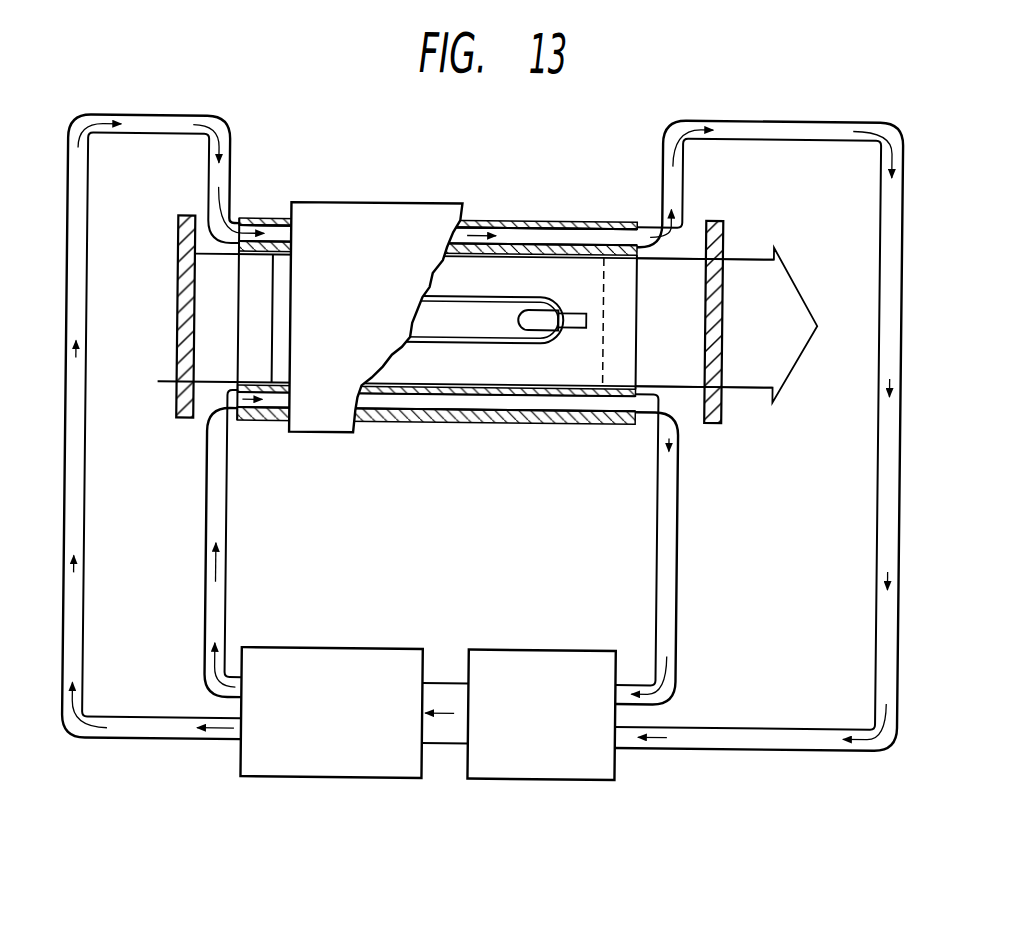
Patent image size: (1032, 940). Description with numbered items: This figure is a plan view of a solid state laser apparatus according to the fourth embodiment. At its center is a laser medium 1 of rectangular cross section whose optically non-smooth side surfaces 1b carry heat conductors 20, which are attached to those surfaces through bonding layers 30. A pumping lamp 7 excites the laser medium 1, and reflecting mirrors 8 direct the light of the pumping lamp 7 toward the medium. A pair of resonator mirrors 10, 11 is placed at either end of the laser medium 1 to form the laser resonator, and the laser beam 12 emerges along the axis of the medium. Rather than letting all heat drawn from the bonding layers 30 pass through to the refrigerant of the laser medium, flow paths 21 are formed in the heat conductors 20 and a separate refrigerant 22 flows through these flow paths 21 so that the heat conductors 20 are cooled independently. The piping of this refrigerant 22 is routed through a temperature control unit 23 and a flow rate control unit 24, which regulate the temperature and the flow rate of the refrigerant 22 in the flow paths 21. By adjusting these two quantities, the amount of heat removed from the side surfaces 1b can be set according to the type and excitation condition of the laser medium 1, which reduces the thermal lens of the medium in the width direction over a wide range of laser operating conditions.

The laser medium 1 is at (465, 325).
The optically non-smooth surfaces 1b is at (615, 222).
The pumping lamp 7 is at (440, 331).
The reflecting mirrors 8 is at (367, 235).
The resonator mirror 10 is at (722, 410).
The resonator mirror 11 is at (157, 385).
The laser beam 12 is at (745, 274).
The heat conductors 20 is at (477, 221).
The flow paths 21 is at (540, 228).
The refrigerant 22 is at (573, 236).
The temperature control unit 23 is at (405, 649).
The flow rate control unit 24 is at (597, 649).
The bonding layers 30 is at (503, 225).